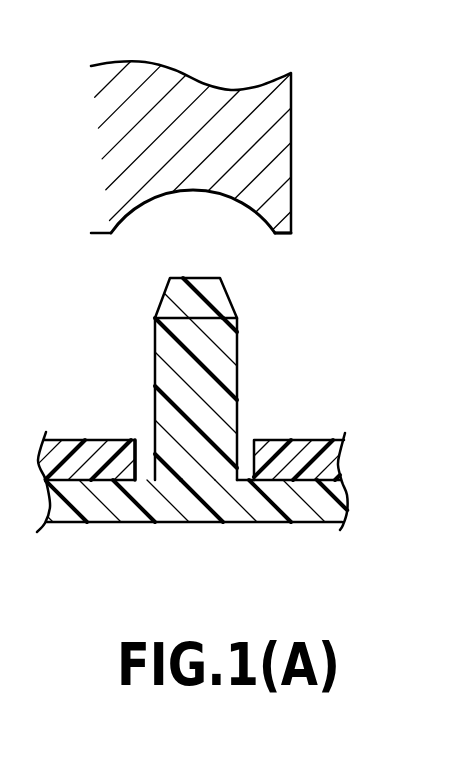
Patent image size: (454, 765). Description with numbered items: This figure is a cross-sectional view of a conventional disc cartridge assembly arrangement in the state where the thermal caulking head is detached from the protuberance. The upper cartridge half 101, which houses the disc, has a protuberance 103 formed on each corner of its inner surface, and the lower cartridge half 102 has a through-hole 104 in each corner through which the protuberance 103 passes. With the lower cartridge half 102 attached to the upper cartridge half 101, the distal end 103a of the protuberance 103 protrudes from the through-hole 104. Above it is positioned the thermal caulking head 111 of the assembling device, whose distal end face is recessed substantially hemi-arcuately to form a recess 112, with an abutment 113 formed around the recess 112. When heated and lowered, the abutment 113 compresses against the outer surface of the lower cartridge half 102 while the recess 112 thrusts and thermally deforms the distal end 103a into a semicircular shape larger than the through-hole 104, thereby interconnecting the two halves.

The upper cartridge half 101 is at (323, 502).
The lower cartridge half 102 is at (323, 462).
The protuberance 103 is at (212, 355).
The distal end 103a is at (205, 300).
The through-hole 104 is at (251, 456).
The thermal caulking head 111 is at (271, 136).
The recess 112 is at (193, 190).
The abutment 113 is at (283, 234).